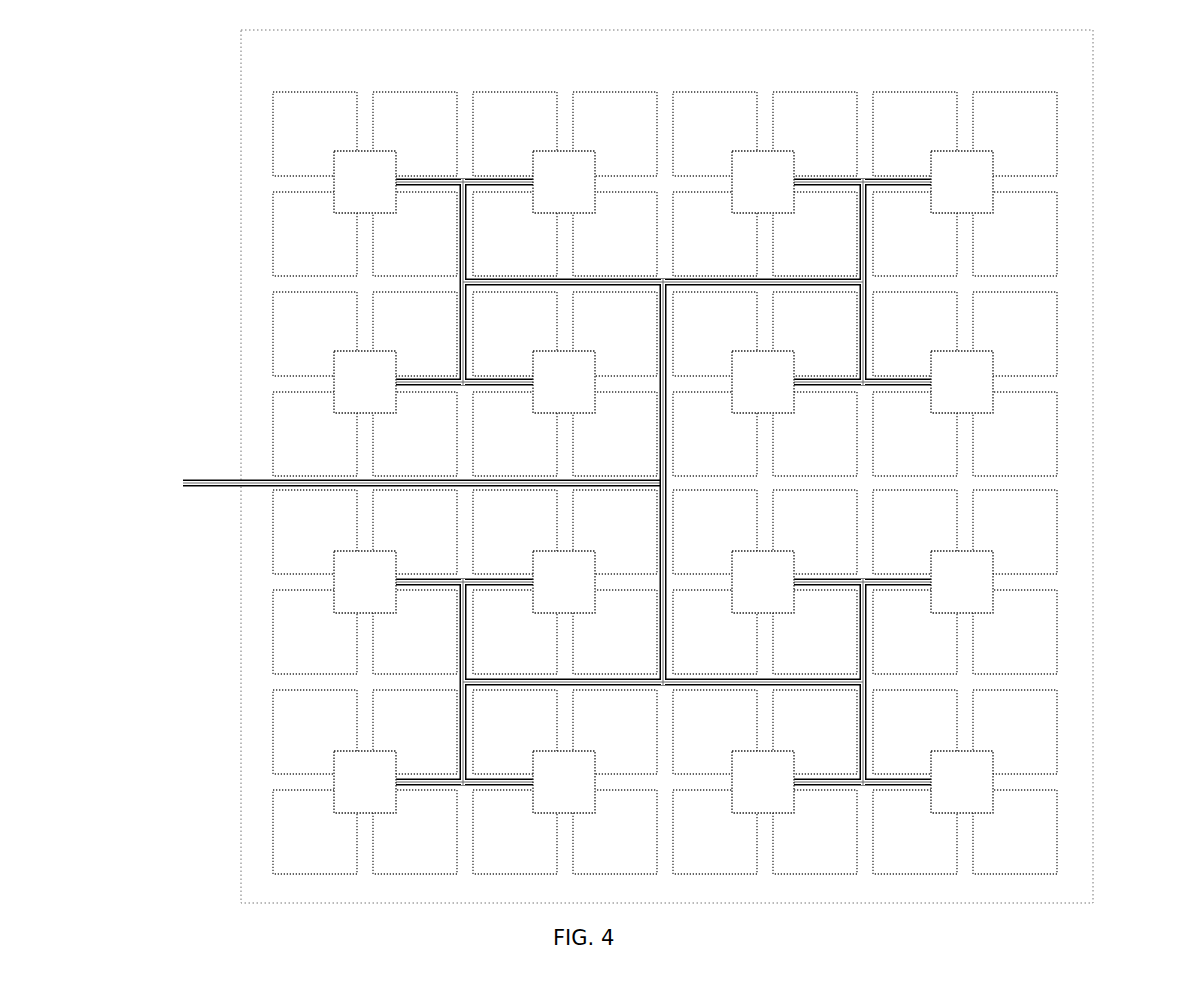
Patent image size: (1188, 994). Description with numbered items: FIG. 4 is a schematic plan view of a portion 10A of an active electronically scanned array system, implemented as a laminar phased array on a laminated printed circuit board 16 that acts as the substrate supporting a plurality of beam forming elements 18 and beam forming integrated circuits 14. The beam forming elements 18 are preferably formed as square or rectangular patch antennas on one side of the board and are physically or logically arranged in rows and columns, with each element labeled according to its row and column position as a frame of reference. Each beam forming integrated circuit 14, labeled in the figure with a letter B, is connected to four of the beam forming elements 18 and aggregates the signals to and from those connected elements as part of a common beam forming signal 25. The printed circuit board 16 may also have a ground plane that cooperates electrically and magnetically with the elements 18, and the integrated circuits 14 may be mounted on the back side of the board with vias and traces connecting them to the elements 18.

The portion of AESA system 10A is at (630, 490).
The beam forming integrated circuit 14 is at (353, 177).
The laminated printed circuit board 16 is at (1123, 804).
The beam forming element 18 is at (308, 107).
The common beam forming signal 25 is at (400, 474).